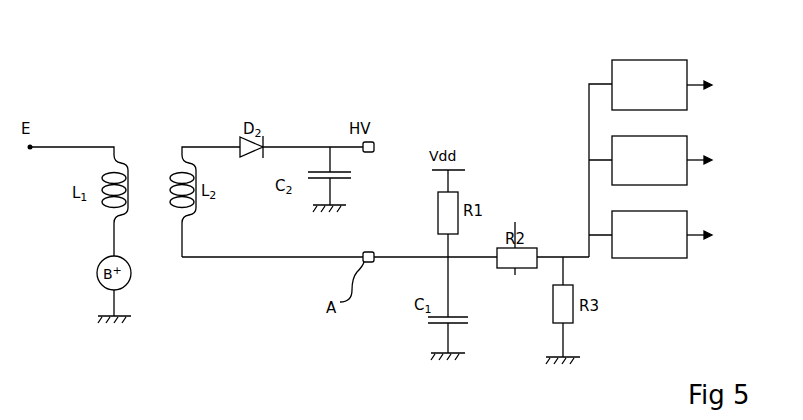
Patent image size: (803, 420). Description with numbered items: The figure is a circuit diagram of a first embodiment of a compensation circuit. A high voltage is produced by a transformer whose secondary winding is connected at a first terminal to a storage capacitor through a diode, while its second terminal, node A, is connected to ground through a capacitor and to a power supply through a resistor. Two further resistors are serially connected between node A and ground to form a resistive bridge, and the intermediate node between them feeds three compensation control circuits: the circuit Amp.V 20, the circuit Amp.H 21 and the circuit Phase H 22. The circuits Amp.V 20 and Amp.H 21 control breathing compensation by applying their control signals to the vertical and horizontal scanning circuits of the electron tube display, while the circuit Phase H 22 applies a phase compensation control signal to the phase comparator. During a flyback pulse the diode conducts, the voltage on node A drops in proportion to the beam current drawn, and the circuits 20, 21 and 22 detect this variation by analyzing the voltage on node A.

The compensation control circuit Amp.V 20 is at (657, 258).
The compensation control circuit Amp.H 21 is at (680, 185).
The compensation control circuit Phase H 22 is at (633, 60).